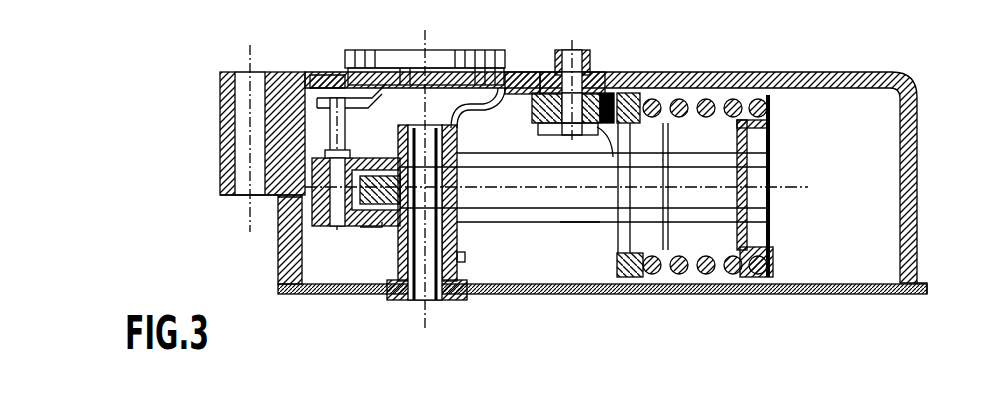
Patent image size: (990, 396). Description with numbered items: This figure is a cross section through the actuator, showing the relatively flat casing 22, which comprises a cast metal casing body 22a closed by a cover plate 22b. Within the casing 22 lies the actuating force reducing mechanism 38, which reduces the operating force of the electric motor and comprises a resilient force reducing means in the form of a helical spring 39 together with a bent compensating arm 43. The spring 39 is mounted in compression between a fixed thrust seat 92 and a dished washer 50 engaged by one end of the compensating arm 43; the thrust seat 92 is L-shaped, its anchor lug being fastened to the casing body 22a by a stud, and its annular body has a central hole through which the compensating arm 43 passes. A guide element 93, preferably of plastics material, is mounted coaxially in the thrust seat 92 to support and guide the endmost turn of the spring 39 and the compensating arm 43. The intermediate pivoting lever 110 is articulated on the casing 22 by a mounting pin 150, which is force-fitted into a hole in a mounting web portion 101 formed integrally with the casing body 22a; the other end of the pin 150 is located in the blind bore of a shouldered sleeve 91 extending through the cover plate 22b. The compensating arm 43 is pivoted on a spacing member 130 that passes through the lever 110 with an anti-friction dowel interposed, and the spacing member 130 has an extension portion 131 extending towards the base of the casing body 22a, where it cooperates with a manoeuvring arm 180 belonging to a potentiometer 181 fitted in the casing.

The casing 22 is at (220, 178).
The casing body 22a is at (277, 213).
The cover plate 22b is at (323, 298).
The actuating force reducing mechanism 38 is at (578, 226).
The helical spring 39 is at (726, 277).
The compensating arm 43 is at (537, 223).
The dished washer 50 is at (773, 260).
The shouldered sleeve 91 is at (458, 253).
The fixed thrust seat 92 is at (629, 258).
The guide element 93 is at (661, 276).
The mounting web portion 101 is at (463, 133).
The intermediate pivoting lever 110 is at (382, 222).
The spacing member 130 is at (333, 230).
The extension portion 131 is at (330, 134).
The mounting pin 150 is at (413, 303).
The manoeuvring arm 180 is at (320, 72).
The potentiometer 181 is at (510, 62).